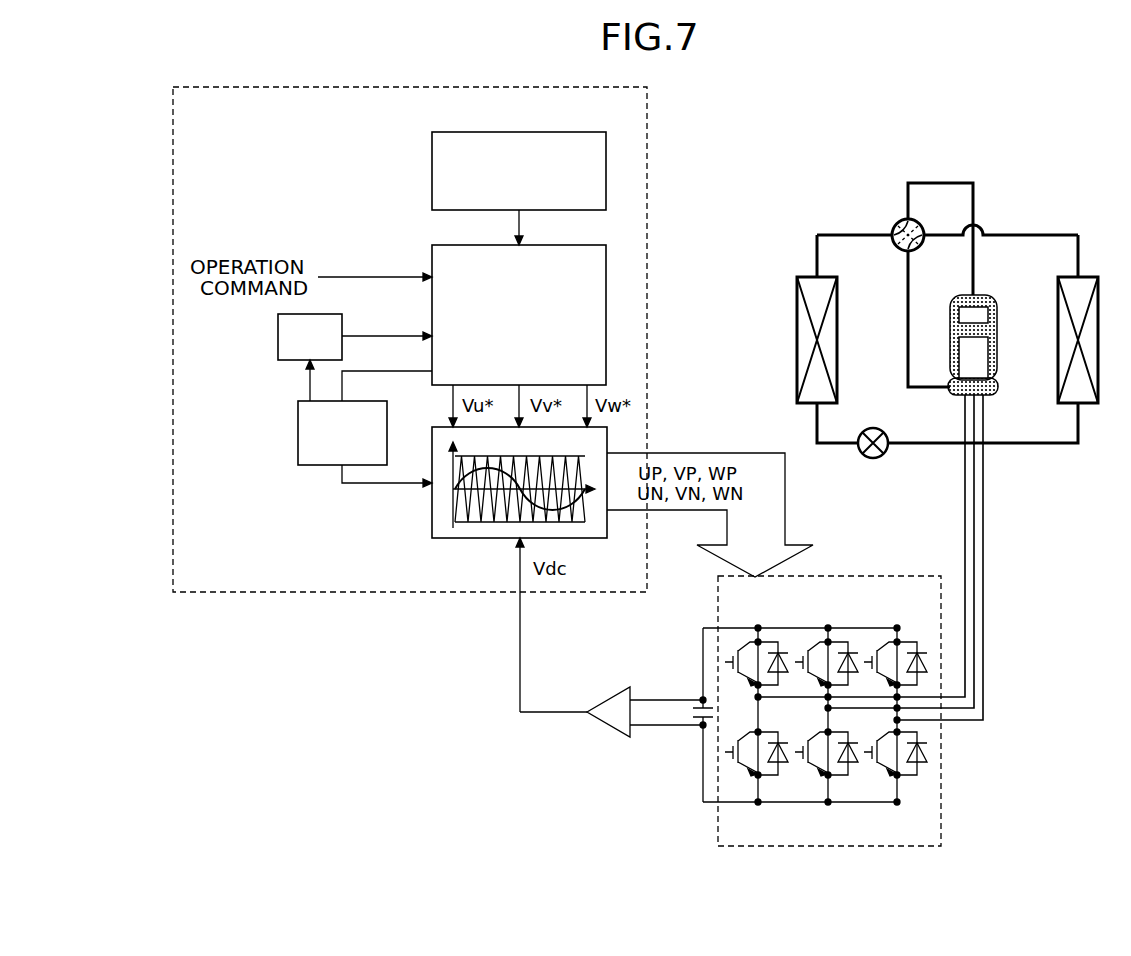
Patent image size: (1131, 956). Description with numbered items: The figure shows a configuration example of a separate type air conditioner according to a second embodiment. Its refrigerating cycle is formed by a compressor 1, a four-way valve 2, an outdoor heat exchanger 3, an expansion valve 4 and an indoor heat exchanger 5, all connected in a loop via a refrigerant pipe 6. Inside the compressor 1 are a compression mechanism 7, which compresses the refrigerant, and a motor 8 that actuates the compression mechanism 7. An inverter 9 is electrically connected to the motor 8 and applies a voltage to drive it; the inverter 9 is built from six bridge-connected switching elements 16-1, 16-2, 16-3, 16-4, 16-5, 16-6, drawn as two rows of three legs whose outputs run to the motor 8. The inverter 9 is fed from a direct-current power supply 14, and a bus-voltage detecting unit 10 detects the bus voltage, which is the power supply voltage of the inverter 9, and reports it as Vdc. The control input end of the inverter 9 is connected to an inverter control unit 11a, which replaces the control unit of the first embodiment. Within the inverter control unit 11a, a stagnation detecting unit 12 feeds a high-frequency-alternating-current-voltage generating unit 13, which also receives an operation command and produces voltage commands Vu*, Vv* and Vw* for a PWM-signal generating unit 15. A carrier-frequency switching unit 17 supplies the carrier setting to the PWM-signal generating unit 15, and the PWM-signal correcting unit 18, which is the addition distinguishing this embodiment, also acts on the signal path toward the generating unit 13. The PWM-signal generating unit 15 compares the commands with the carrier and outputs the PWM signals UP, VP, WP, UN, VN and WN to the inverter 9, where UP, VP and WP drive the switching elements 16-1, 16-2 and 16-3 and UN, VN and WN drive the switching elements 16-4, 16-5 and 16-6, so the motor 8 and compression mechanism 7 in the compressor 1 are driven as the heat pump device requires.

The compressor 1 is at (980, 295).
The four-way valve 2 is at (896, 222).
The outdoor heat exchanger 3 is at (826, 277).
The expansion valve 4 is at (884, 429).
The indoor heat exchanger 5 is at (1088, 277).
The refrigerant pipe 6 is at (1015, 235).
The compression mechanism 7 is at (982, 315).
The motor 8 is at (982, 355).
The inverter 9 is at (822, 694).
The bus-voltage detecting unit 10 is at (612, 690).
The inverter control unit 11a is at (523, 87).
The stagnation detecting unit 12 is at (560, 132).
The high-frequency-alternating-current-voltage generating unit 13 is at (560, 245).
The direct-current power supply 14 is at (690, 715).
The PWM-signal generating unit 15 is at (432, 520).
The switching element 16-1 is at (768, 628).
The switching element 16-2 is at (838, 628).
The switching element 16-3 is at (907, 628).
The switching element 16-4 is at (768, 802).
The switching element 16-5 is at (838, 802).
The switching element 16-6 is at (907, 802).
The carrier-frequency switching unit 17 is at (358, 401).
The PWM-signal correcting unit 18 is at (336, 314).